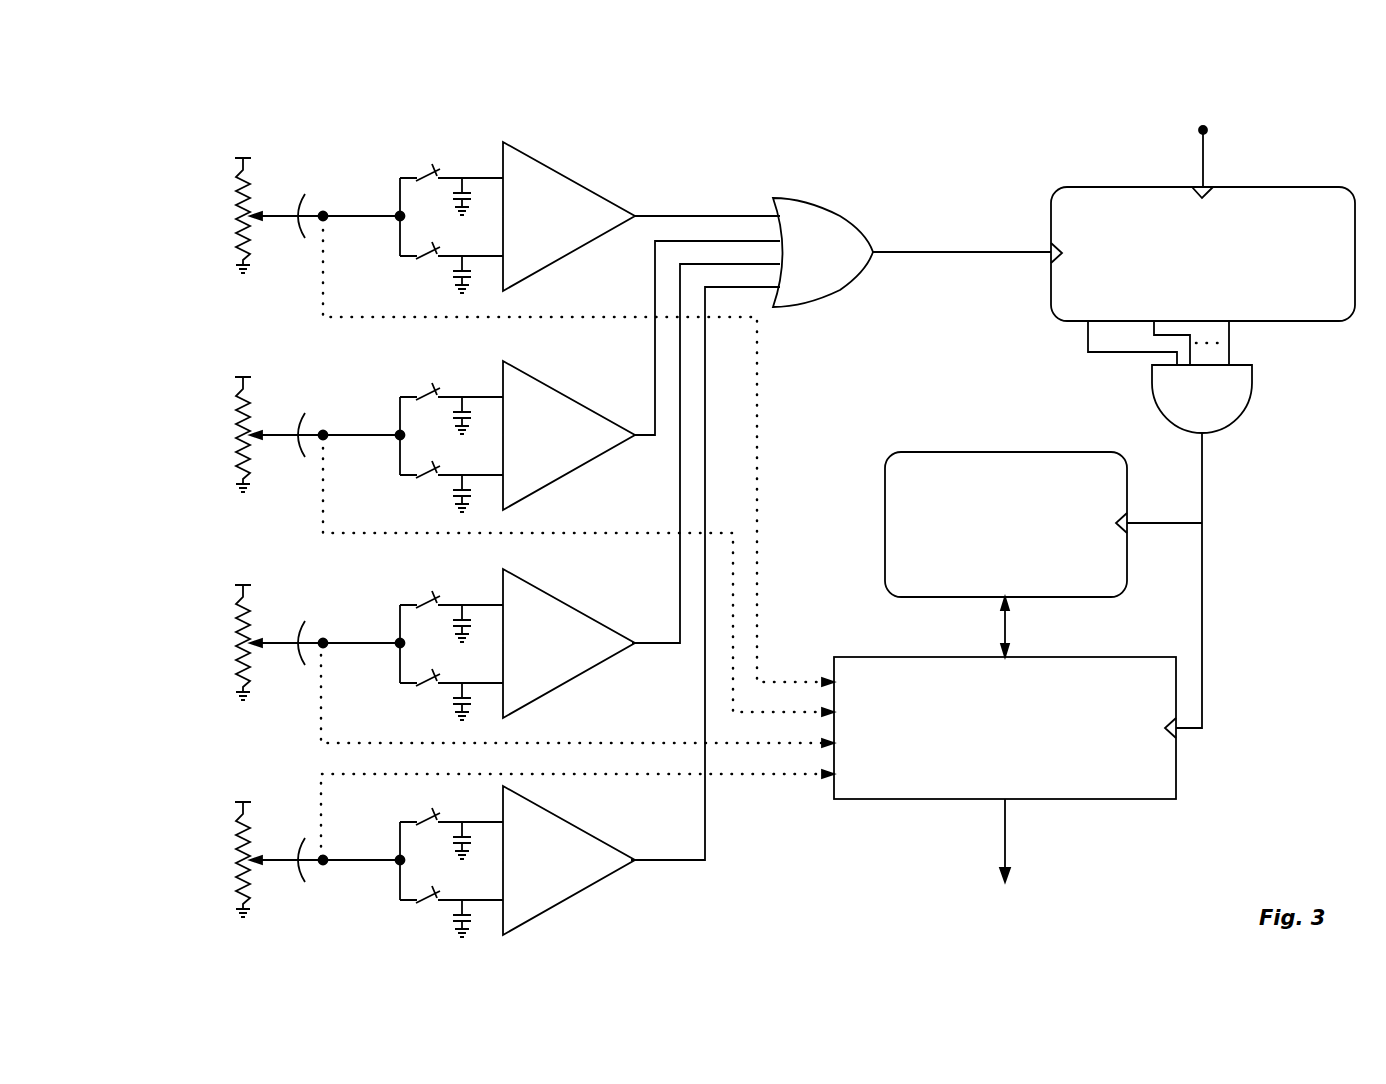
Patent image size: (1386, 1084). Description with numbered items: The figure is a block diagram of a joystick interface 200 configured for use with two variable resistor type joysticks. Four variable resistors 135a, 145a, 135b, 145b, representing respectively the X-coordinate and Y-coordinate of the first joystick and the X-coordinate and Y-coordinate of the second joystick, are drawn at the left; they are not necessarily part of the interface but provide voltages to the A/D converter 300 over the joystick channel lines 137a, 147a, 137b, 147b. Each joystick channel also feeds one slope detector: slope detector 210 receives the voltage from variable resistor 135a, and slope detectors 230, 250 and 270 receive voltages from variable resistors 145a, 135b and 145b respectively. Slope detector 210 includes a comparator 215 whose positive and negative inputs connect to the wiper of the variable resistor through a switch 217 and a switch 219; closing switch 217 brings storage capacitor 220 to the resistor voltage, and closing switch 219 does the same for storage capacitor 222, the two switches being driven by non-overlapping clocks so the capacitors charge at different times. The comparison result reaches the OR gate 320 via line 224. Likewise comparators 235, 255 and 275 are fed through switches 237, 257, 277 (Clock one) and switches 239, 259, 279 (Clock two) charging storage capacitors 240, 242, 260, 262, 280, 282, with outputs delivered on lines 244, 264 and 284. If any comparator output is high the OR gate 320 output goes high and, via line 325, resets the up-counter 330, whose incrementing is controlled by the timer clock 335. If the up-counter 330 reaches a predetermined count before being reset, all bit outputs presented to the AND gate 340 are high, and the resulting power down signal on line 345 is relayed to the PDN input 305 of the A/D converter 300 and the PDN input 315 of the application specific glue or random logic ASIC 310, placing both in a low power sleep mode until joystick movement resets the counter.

The joystick interface 200 is at (868, 155).
The slope detector 210 is at (500, 205).
The comparator 215 is at (552, 170).
The switch 217 is at (422, 175).
The switch 219 is at (424, 258).
The storage capacitor 220 is at (468, 204).
The storage capacitor 222 is at (470, 291).
The line 224 is at (702, 216).
The slope detector 230 is at (500, 424).
The comparator 235 is at (569, 435).
The switch 237 is at (434, 415).
The switch 239 is at (442, 489).
The storage capacitor 240 is at (481, 432).
The storage capacitor 242 is at (500, 503).
The line 244 is at (645, 437).
The slope detector 250 is at (500, 632).
The comparator 255 is at (569, 643).
The switch 257 is at (434, 623).
The switch 259 is at (442, 697).
The storage capacitor 260 is at (481, 640).
The storage capacitor 262 is at (500, 711).
The line 264 is at (660, 645).
The slope detector 270 is at (500, 849).
The comparator 275 is at (569, 860).
The switch 277 is at (434, 840).
The switch 279 is at (442, 914).
The storage capacitor 280 is at (481, 857).
The storage capacitor 282 is at (500, 928).
The line 284 is at (660, 862).
The variable resistor 135a is at (238, 262).
The variable resistor 145a is at (291, 426).
The variable resistor 135b is at (291, 634).
The variable resistor 145b is at (291, 851).
The joystick #1 X analog input line 137a is at (760, 386).
The joystick #1 Y analog input line 147a is at (632, 533).
The joystick #2 X analog input line 137b is at (663, 743).
The joystick #2 Y analog input line 147b is at (555, 774).
The A/D converter 300 is at (1118, 704).
The power-down input PDN 305 is at (1156, 750).
The application specific glue or random logic ASIC 310 is at (932, 587).
The power-down input PDN 315 is at (1108, 545).
The OR gate 320 is at (828, 292).
The line 325 is at (928, 251).
The up-counter 330 is at (1216, 279).
The timer clock 335 is at (1262, 112).
The AND gate 340 is at (1248, 398).
The line 345 is at (1202, 515).